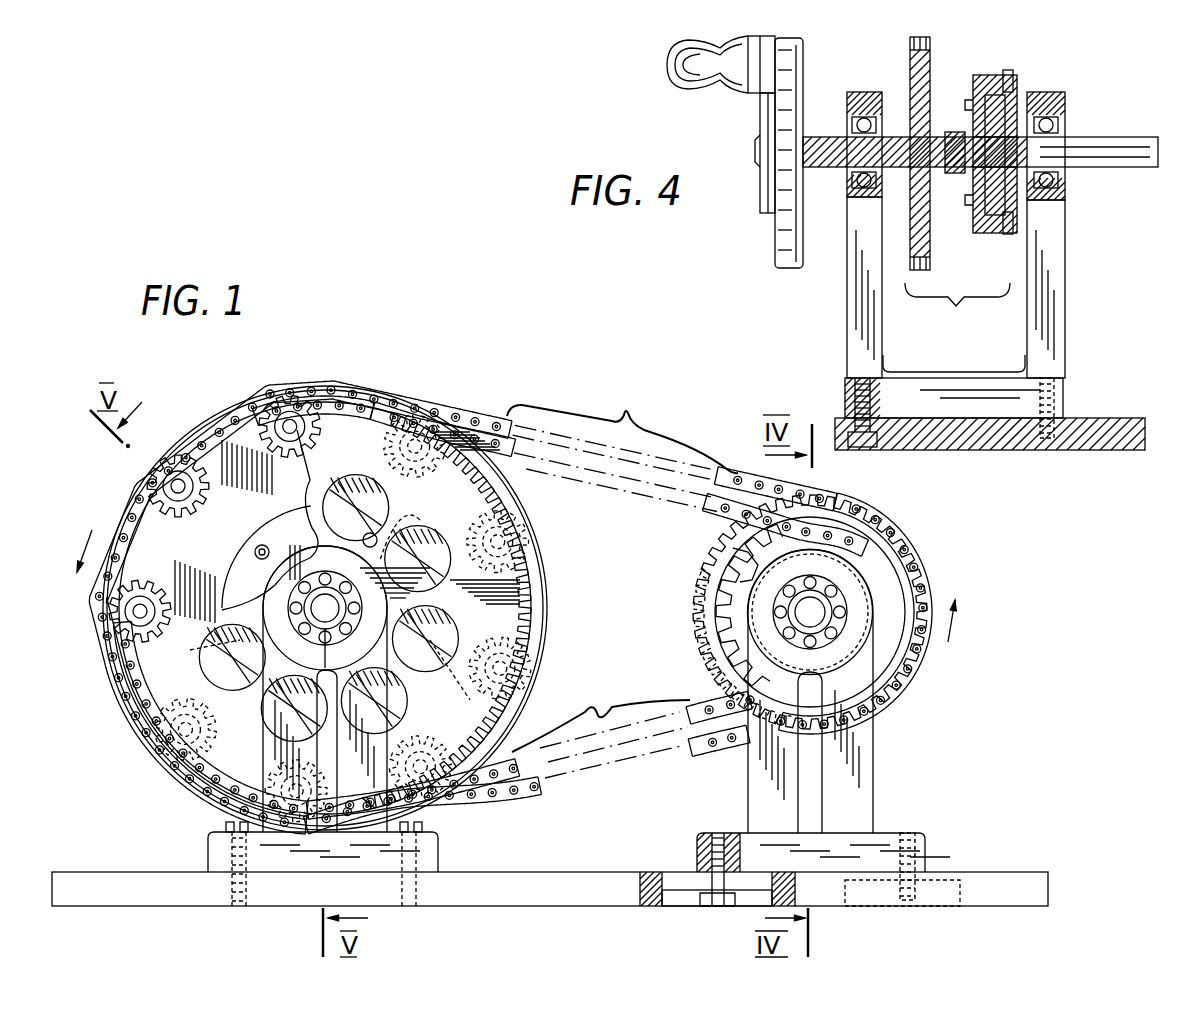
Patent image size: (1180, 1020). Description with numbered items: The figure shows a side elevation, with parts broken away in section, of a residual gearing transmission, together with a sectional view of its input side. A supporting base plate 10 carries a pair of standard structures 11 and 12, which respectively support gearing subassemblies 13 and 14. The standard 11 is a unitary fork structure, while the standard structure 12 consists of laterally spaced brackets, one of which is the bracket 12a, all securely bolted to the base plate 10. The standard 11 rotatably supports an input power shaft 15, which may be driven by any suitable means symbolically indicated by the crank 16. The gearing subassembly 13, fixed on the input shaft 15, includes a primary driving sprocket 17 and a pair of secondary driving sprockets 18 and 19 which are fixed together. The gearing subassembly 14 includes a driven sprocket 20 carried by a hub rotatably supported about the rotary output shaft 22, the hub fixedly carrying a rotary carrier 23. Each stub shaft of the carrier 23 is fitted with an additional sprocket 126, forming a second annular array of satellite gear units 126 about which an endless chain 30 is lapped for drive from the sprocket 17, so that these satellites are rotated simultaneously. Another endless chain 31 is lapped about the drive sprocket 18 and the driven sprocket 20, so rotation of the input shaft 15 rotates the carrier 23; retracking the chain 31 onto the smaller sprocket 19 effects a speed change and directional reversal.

In FIG. 1, the supporting base plate 10 is at (568, 853).
In FIG. 4, the supporting base plate 10 is at (990, 467).
In FIG. 1, the standard structure 11 is at (839, 711).
In FIG. 4, the standard structure 11 is at (997, 396).
In FIG. 1, the standard structure 12 is at (277, 864).
In FIG. 1, the bracket 12a is at (248, 689).
In FIG. 1, the gearing subassembly 13 is at (875, 589).
In FIG. 4, the gearing subassembly 13 is at (957, 315).
In FIG. 1, the gearing subassembly 14 is at (510, 572).
In FIG. 1, the input power shaft 15 is at (852, 566).
In FIG. 4, the input power shaft 15 is at (980, 115).
In FIG. 1, the crank 16 is at (712, 647).
In FIG. 4, the crank 16 is at (739, 158).
In FIG. 1, the primary driving sprocket 17 is at (782, 612).
In FIG. 4, the primary driving sprocket 17 is at (886, 153).
In FIG. 1, the secondary driving sprocket 18 is at (712, 605).
In FIG. 4, the secondary driving sprocket 18 is at (976, 167).
In FIG. 1, the secondary driving sprocket 19 is at (704, 556).
In FIG. 4, the secondary driving sprocket 19 is at (991, 170).
In FIG. 1, the driven sprocket 20 is at (368, 608).
In FIG. 1, the rotary output shaft 22 is at (312, 578).
In FIG. 1, the rotary carrier 23 is at (364, 608).
In FIG. 1, the endless chain 30 is at (622, 448).
In FIG. 1, the endless chain 31 is at (601, 729).
In FIG. 1, the additional sprocket 126 is at (366, 609).